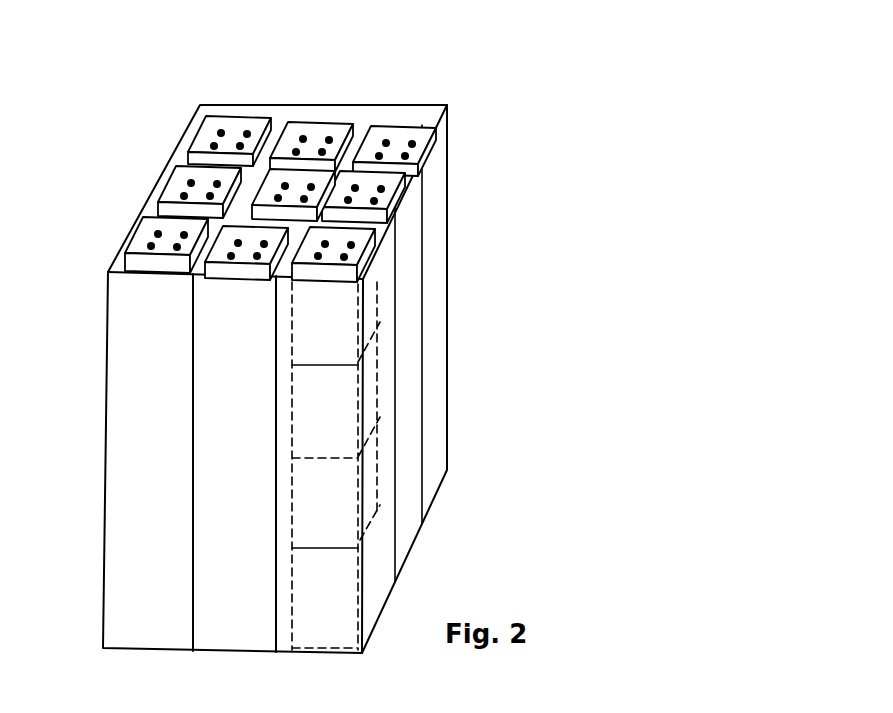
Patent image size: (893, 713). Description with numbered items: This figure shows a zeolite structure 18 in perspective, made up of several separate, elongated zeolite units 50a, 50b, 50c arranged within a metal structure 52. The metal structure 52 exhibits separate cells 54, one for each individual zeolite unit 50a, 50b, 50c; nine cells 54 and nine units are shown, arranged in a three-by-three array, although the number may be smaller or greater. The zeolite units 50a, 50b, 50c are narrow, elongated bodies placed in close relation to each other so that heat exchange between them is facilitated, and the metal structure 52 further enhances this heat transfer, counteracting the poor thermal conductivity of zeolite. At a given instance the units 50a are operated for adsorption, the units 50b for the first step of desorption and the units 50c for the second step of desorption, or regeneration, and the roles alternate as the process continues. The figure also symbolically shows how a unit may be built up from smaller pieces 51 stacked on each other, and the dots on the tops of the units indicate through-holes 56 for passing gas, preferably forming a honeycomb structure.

The battery pack assembly 18 is at (505, 367).
The zeolite unit 50a is at (228, 124).
The zeolite unit 50b is at (436, 110).
The zeolite unit 50c is at (352, 127).
The smaller pieces 51 is at (330, 510).
The metal structure 52 is at (433, 332).
The cells 54 is at (277, 107).
The through-holes 56 is at (190, 107).